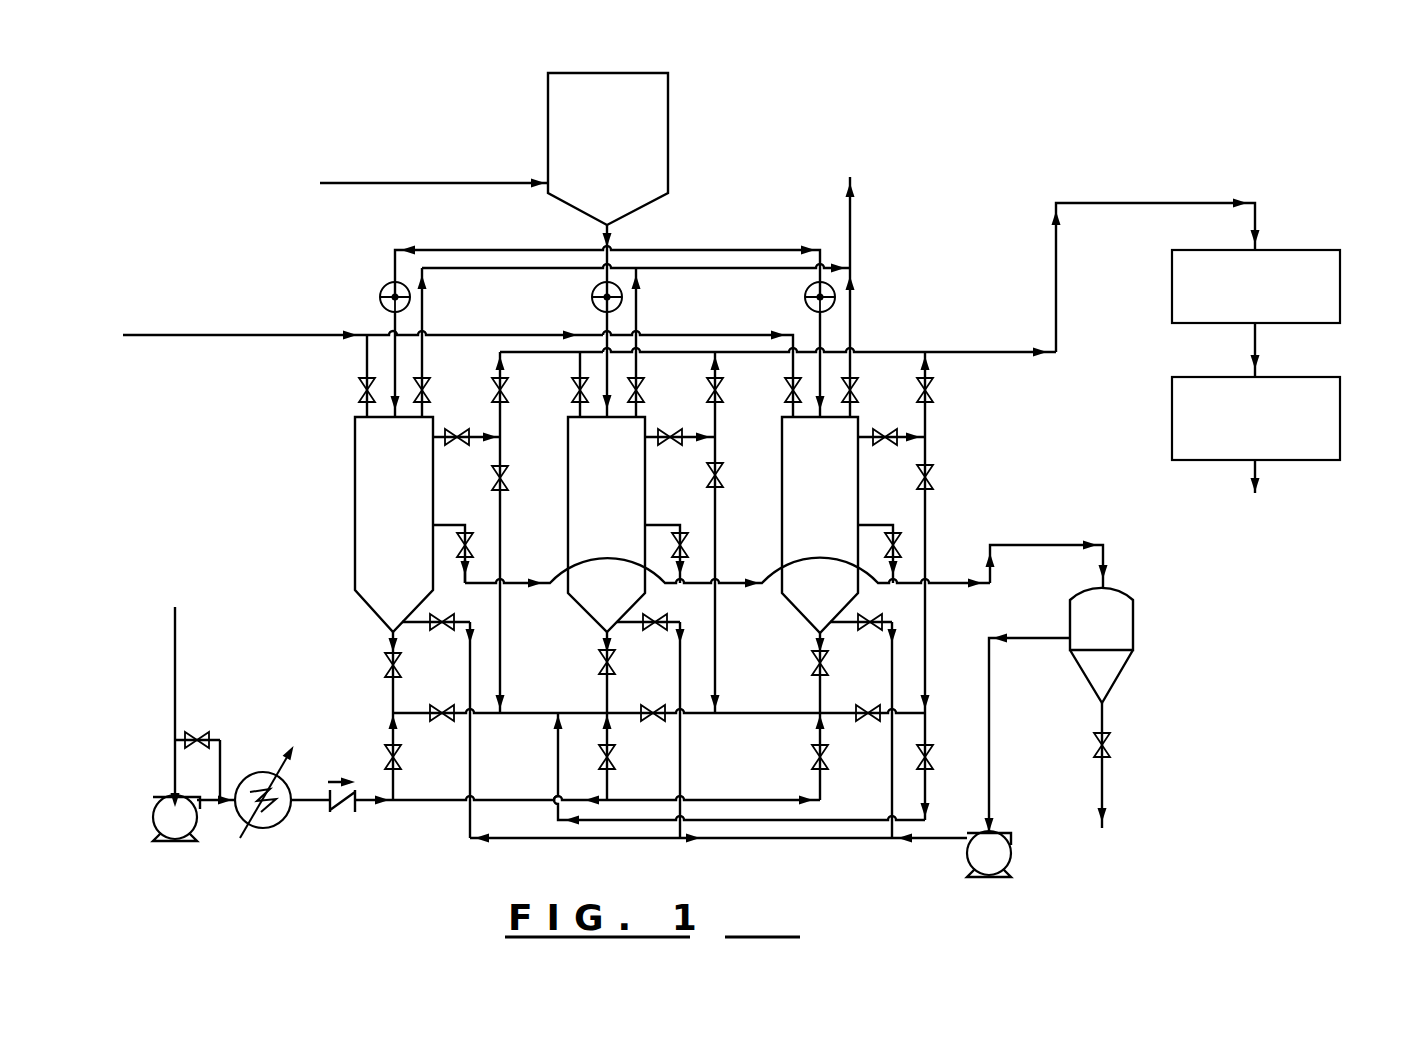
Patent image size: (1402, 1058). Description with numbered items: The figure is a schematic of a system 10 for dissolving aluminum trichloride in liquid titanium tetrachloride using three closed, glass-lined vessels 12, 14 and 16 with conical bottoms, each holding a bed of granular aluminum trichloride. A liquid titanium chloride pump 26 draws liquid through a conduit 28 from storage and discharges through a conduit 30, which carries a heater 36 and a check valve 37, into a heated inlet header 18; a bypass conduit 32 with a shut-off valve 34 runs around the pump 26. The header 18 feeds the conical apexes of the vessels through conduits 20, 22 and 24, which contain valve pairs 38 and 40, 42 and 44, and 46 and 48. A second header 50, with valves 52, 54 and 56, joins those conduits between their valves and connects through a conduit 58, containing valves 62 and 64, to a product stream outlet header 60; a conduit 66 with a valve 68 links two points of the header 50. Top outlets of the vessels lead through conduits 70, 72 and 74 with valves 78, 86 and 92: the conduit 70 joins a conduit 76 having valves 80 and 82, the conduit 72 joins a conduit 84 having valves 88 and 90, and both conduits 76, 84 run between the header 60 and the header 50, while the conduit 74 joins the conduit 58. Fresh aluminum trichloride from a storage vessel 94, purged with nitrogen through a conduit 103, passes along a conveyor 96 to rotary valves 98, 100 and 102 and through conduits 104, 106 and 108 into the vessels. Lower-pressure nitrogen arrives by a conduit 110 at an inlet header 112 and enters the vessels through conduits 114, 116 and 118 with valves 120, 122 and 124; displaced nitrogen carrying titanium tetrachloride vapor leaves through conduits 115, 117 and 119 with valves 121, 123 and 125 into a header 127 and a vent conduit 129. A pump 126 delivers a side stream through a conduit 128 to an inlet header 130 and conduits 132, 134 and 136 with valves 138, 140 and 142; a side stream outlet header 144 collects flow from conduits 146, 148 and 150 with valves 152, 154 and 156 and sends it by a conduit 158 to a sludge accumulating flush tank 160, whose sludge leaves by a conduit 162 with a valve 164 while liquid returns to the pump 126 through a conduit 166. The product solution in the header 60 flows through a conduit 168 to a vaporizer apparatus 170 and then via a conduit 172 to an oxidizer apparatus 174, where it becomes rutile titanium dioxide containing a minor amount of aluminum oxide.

The system 10 is at (282, 246).
The closed vessel 12 is at (360, 495).
The closed vessel 14 is at (577, 495).
The closed vessel 16 is at (790, 495).
The liquid titanium tetrachloride inlet header 18 is at (432, 808).
The conduit 20 is at (390, 689).
The conduit 22 is at (600, 690).
The conduit 24 is at (815, 690).
The liquid titanium chloride pump 26 is at (156, 810).
The conduit 28 is at (172, 688).
The conduit 30 is at (380, 806).
The bypass conduit 32 is at (222, 760).
The shut-off valve 34 is at (201, 738).
The liquid titanium tetrachloride heater 36 is at (290, 815).
The check valve 37 is at (342, 808).
The valve 38 is at (385, 665).
The valve 40 is at (385, 757).
The valve 42 is at (598, 660).
The valve 44 is at (616, 757).
The valve 46 is at (812, 660).
The valve 48 is at (828, 757).
The second header 50 is at (540, 712).
The valve 52 is at (455, 704).
The valve 54 is at (665, 704).
The valve 56 is at (880, 705).
The conduit 58 is at (938, 522).
The product stream outlet header 60 is at (875, 348).
The valve 62 is at (935, 391).
The valve 64 is at (937, 478).
The conduit 66 is at (556, 752).
The valve 68 is at (935, 760).
The conduit 70 is at (447, 432).
The conduit 72 is at (657, 432).
The conduit 74 is at (870, 432).
The conduit 76 is at (505, 537).
The valve 78 is at (467, 446).
The valve 80 is at (512, 392).
The valve 82 is at (512, 478).
The conduit 84 is at (718, 537).
The valve 86 is at (680, 446).
The valve 88 is at (723, 390).
The valve 90 is at (725, 477).
The valve 92 is at (895, 446).
The storage vessel 94 is at (668, 156).
The conveyor 96 is at (686, 249).
The rotary valve 98 is at (383, 288).
The rotary valve 100 is at (592, 292).
The rotary valve 102 is at (805, 293).
The conduit 103 is at (506, 185).
The conduit 104 is at (388, 322).
The conduit 106 is at (602, 322).
The conduit 108 is at (814, 326).
The conduit 110 is at (302, 340).
The inlet header 112 is at (507, 332).
The conduit 114 is at (360, 351).
The conduit 115 is at (426, 305).
The conduit 116 is at (548, 352).
The conduit 117 is at (641, 306).
The conduit 118 is at (770, 336).
The conduit 119 is at (856, 291).
The valve 120 is at (356, 393).
The valve 121 is at (430, 378).
The valve 122 is at (571, 392).
The valve 123 is at (645, 389).
The valve 124 is at (782, 392).
The valve 125 is at (858, 390).
The pump 126 is at (1003, 838).
The header 127 is at (487, 270).
The conduit 128 is at (925, 842).
The conduit 129 is at (855, 218).
The inlet header 130 is at (768, 840).
The conduit 132 is at (473, 782).
The conduit 134 is at (684, 775).
The conduit 136 is at (890, 780).
The valve 138 is at (452, 628).
The valve 140 is at (665, 628).
The valve 142 is at (878, 628).
The side stream outlet header 144 is at (510, 587).
The conduit 146 is at (455, 522).
The conduit 148 is at (668, 522).
The conduit 150 is at (880, 522).
The valve 152 is at (458, 560).
The valve 154 is at (692, 551).
The valve 156 is at (905, 548).
The conduit 158 is at (1035, 545).
The sludge accumulating flush tank 160 is at (1122, 606).
The conduit 162 is at (1108, 786).
The valve 164 is at (1114, 746).
The conduit 166 is at (994, 735).
The conduit 168 is at (1112, 203).
The vaporizer apparatus 170 is at (1312, 250).
The conduit 172 is at (1257, 358).
The oxidizer apparatus 174 is at (1322, 377).